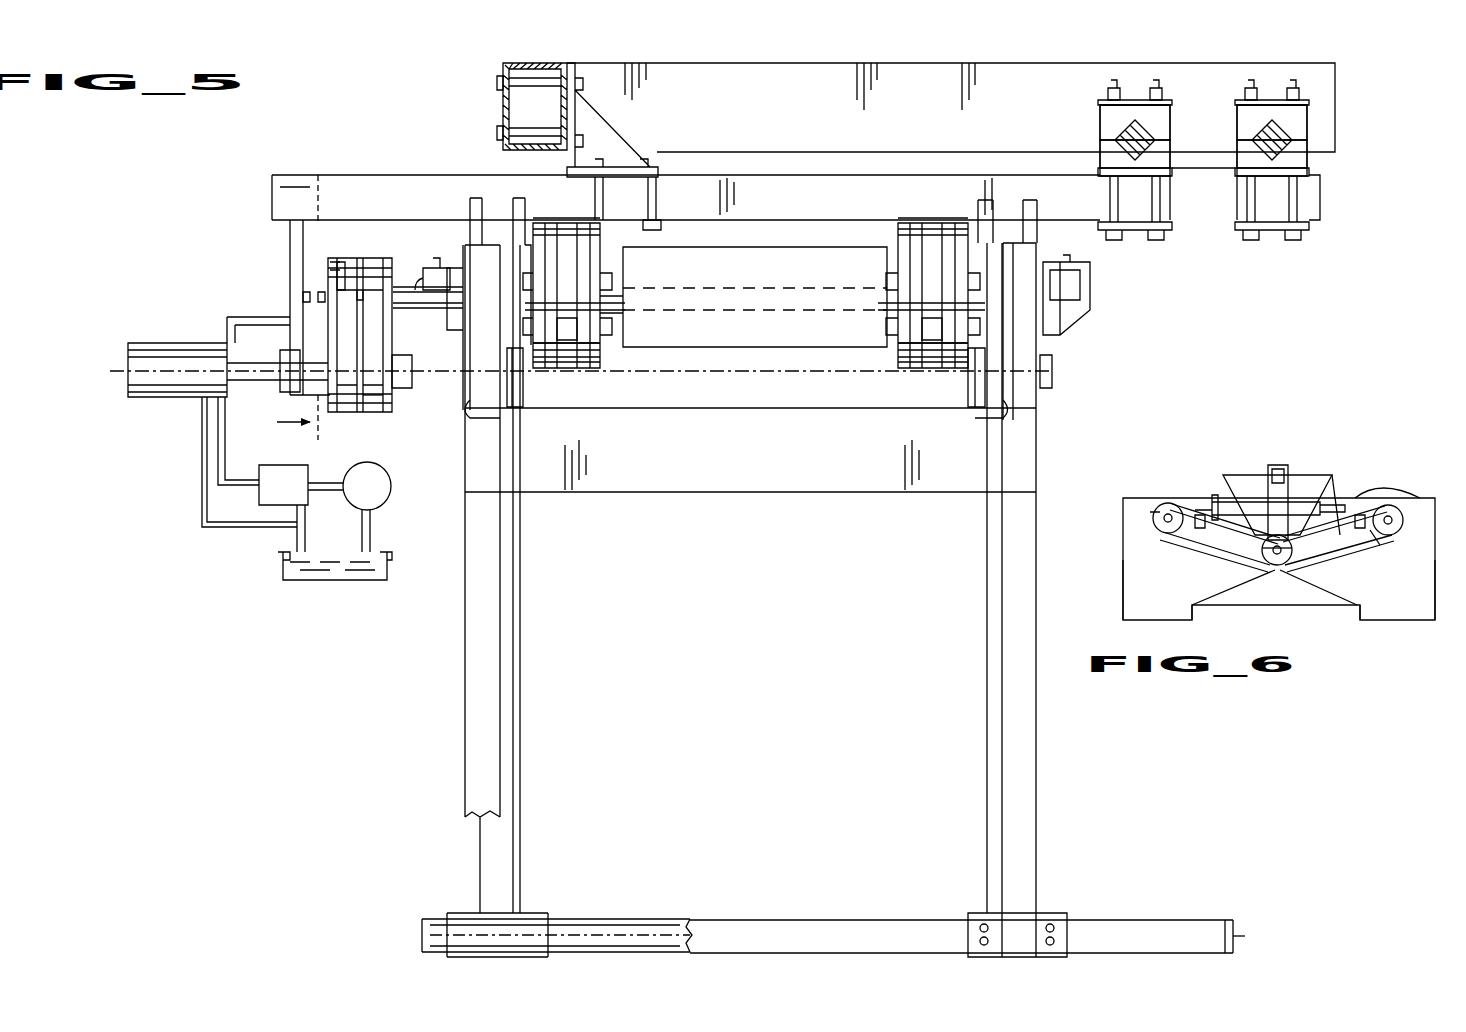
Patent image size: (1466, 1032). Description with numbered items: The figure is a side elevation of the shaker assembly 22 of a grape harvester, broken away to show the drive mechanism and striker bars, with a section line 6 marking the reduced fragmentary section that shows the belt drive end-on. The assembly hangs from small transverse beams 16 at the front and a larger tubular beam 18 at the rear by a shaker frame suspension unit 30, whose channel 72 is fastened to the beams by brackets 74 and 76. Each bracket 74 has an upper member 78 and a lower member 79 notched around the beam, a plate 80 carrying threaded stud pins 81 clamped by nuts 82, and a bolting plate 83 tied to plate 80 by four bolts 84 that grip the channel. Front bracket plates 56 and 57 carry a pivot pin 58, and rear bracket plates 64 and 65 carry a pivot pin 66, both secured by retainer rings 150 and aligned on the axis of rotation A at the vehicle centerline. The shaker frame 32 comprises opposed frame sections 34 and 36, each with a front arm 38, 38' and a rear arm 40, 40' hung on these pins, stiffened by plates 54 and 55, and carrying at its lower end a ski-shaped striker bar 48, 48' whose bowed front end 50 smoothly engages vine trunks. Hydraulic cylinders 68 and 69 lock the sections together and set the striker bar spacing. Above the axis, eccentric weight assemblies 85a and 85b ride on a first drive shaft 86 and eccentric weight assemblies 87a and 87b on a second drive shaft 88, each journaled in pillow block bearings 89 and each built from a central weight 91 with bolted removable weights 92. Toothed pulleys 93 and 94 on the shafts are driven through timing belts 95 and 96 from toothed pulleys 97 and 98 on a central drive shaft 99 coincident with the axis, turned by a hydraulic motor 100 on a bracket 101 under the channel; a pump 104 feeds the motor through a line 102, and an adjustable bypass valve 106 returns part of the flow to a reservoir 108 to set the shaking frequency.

In FIG. 5, the section line 6— 6 is at (308, 307).
In FIG. 5, the small beams 16 is at (1172, 145).
In FIG. 5, the tubular beam 18 is at (503, 103).
In FIG. 5, the shaker assembly 22 is at (385, 142).
In FIG. 6, the shaker assembly 22 is at (1372, 453).
In FIG. 5, the shaker frame suspension unit 30 is at (768, 175).
In FIG. 6, the shaker frame suspension unit 30 is at (1315, 475).
In FIG. 5, the shaker frame 32 is at (440, 660).
In FIG. 6, the shaker frame 32 is at (1160, 625).
In FIG. 5, the frame section 34 is at (1039, 731).
In FIG. 6, the frame section 34 is at (1357, 610).
In FIG. 5, the frame section 36 is at (985, 748).
In FIG. 6, the frame section 36 is at (1200, 610).
In FIG. 5, the front arm 38 is at (1063, 780).
In FIG. 5, the front arm 38' is at (948, 778).
In FIG. 5, the rear arm 40 is at (453, 579).
In FIG. 6, the rear arm 40 is at (1414, 605).
In FIG. 5, the rear arm 40' is at (542, 579).
In FIG. 6, the rear arm 40' is at (1114, 603).
In FIG. 5, the striker bar 48 is at (961, 916).
In FIG. 5, the striker bar 48' is at (557, 915).
In FIG. 5, the front end 50 is at (1256, 936).
In FIG. 5, the plate 54 is at (765, 340).
In FIG. 5, the plate 55 is at (765, 441).
In FIG. 5, the bracket plate 56 is at (1030, 200).
In FIG. 5, the bracket plate 57 is at (985, 200).
In FIG. 5, the pivot pin 58 is at (1053, 365).
In FIG. 5, the bracket plate 64 is at (525, 205).
In FIG. 5, the bracket plate 65 is at (470, 198).
In FIG. 6, the bracket plate 65 is at (1335, 500).
In FIG. 5, the pivot pin 66 is at (535, 378).
In FIG. 5, the hydraulic cylinder 68 is at (1092, 283).
In FIG. 5, the hydraulic cylinder 69 is at (435, 268).
In FIG. 6, the hydraulic cylinder 69 is at (1225, 502).
In FIG. 5, the channel 72 is at (818, 203).
In FIG. 6, the channel 72 is at (1278, 465).
In FIG. 5, the bracket 74 is at (1100, 145).
In FIG. 5, the bracket 76 is at (628, 167).
In FIG. 5, the upper member 78 is at (1100, 110).
In FIG. 5, the lower member 79 is at (1172, 168).
In FIG. 5, the plate 80 is at (1100, 176).
In FIG. 5, the threaded stud pins 81 is at (1156, 88).
In FIG. 5, the nuts 82 is at (1100, 95).
In FIG. 5, the bolting plate 83 is at (1130, 232).
In FIG. 5, the bolts 84 is at (1110, 207).
In FIG. 5, the eccentric weight assembly 85a is at (898, 264).
In FIG. 5, the eccentric weight assembly 85b is at (603, 264).
In FIG. 6, the eccentric weight assembly 85b is at (1398, 485).
In FIG. 5, the first drive shaft 86 is at (358, 306).
In FIG. 6, the first drive shaft 86 is at (1390, 524).
In FIG. 5, the eccentric weight assembly 87a is at (940, 370).
In FIG. 5, the eccentric weight assembly 87b is at (573, 365).
In FIG. 5, the second drive shaft 88 is at (335, 300).
In FIG. 6, the second drive shaft 88 is at (1168, 522).
In FIG. 5, the pillow block bearings 89 is at (447, 315).
In FIG. 5, the central weight 91 is at (575, 340).
In FIG. 5, the removable weights 92 is at (583, 218).
In FIG. 5, the toothed pulley 93 is at (380, 262).
In FIG. 6, the toothed pulley 93 is at (1375, 538).
In FIG. 5, the toothed pulley 94 is at (333, 275).
In FIG. 6, the toothed pulley 94 is at (1162, 508).
In FIG. 5, the timing belt 95 is at (385, 412).
In FIG. 6, the timing belt 95 is at (1350, 552).
In FIG. 5, the timing belt 96 is at (333, 262).
In FIG. 6, the timing belt 96 is at (1210, 550).
In FIG. 5, the toothed pulley 97 is at (395, 402).
In FIG. 5, the toothed pulley 98 is at (300, 388).
In FIG. 6, the toothed pulley 98 is at (1277, 565).
In FIG. 5, the central drive shaft 99 is at (258, 365).
In FIG. 6, the central drive shaft 99 is at (1270, 556).
In FIG. 5, the hydraulic motor 100 is at (200, 350).
In FIG. 5, the bracket 101 is at (227, 320).
In FIG. 5, the line 102 is at (225, 443).
In FIG. 5, the pump 104 is at (380, 498).
In FIG. 5, the adjustable bypass valve 106 is at (270, 496).
In FIG. 5, the reservoir 108 is at (283, 562).
In FIG. 5, the retainer rings 150 is at (487, 420).
In FIG. 5, the axis of rotation A is at (120, 371).